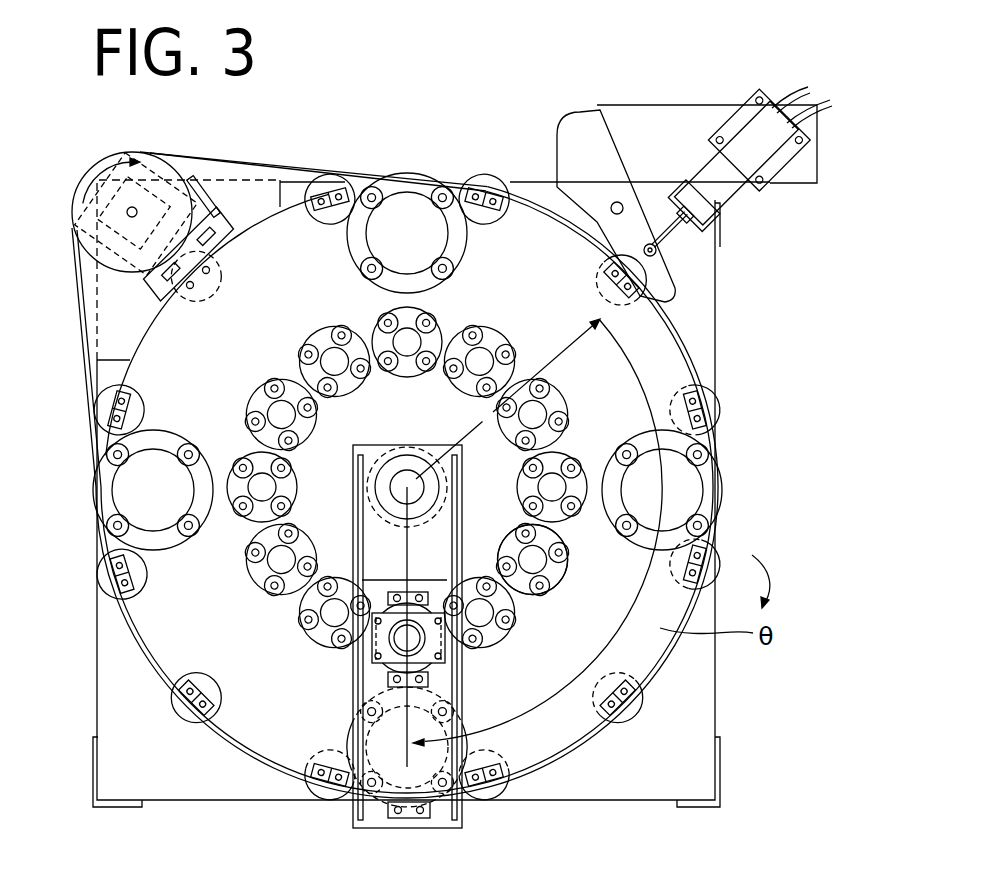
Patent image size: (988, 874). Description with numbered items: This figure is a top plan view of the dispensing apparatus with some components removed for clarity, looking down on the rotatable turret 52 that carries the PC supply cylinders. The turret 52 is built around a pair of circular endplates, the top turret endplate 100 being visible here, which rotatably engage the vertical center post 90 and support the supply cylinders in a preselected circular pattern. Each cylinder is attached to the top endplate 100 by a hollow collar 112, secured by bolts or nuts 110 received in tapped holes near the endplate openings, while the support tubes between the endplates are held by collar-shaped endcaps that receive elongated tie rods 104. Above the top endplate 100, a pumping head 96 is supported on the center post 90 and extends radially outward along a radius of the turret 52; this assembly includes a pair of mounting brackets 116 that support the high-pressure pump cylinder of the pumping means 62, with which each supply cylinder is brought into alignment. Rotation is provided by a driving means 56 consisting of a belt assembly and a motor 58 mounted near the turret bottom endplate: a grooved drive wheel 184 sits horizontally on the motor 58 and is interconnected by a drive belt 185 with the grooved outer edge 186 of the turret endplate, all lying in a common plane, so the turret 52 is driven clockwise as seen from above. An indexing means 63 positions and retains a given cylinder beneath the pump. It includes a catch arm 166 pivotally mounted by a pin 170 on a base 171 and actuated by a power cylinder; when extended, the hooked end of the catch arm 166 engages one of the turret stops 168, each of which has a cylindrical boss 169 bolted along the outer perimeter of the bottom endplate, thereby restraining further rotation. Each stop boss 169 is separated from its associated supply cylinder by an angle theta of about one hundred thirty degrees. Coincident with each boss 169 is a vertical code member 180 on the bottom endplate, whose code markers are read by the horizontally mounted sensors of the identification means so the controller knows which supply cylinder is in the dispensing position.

The turret 52 is at (653, 350).
The driving means 56 is at (60, 212).
The motor 58 is at (174, 155).
The pumping means 62 is at (357, 667).
The indexing means 63 is at (738, 92).
The center post 90 is at (407, 485).
The pumping head 96 is at (435, 598).
The top turret endplate 100 is at (505, 288).
The tie rods 104 is at (117, 453).
The bolts or nuts 110 is at (520, 595).
The hollow collar 112 is at (566, 570).
The mounting brackets 116 is at (456, 510).
The catch arm 166 is at (573, 128).
The turret stops 168 is at (637, 740).
The cylindrical boss 169 is at (187, 718).
The pin 170 is at (617, 200).
The base 171 is at (808, 165).
The code member 180 is at (100, 585).
The drive wheel 184 is at (80, 203).
The drive belt 185 is at (297, 167).
The outer edge 186 is at (530, 195).